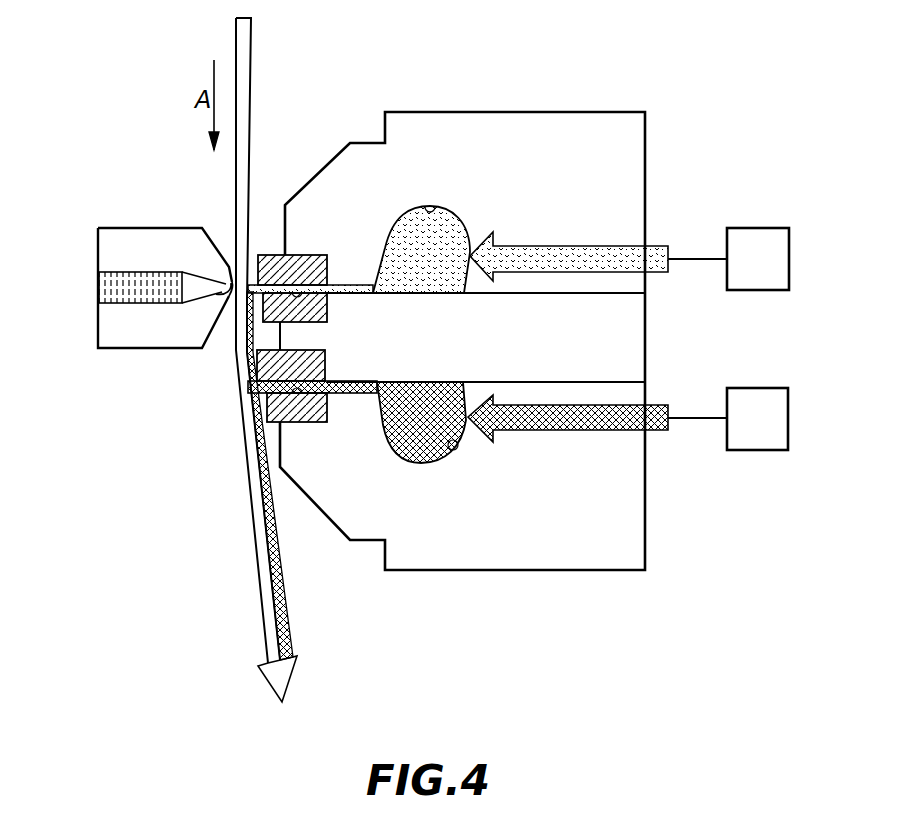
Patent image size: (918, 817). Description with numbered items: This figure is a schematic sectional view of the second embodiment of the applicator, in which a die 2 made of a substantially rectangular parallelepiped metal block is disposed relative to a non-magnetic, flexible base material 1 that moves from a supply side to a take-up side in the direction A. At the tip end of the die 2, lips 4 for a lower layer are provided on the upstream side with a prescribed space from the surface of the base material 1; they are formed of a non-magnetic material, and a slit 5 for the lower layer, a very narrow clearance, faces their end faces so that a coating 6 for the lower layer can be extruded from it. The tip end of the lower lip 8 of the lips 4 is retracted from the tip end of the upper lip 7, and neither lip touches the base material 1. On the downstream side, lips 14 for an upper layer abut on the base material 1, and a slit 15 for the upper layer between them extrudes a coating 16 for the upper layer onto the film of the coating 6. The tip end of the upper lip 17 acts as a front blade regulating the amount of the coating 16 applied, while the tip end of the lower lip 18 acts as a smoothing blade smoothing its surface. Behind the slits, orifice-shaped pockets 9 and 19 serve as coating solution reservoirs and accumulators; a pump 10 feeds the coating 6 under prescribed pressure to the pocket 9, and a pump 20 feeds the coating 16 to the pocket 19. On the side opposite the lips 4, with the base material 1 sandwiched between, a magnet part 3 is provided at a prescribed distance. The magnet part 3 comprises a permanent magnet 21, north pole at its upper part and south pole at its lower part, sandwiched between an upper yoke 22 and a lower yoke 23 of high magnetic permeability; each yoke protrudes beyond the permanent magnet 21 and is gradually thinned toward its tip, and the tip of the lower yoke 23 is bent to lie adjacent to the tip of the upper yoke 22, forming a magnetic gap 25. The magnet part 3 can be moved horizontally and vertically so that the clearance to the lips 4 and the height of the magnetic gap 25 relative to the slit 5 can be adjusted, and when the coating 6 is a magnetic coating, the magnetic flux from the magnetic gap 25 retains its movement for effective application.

The base material 1 is at (246, 68).
The die 2 is at (607, 78).
The magnet part 3 is at (134, 290).
The lips for a lower layer 4 is at (344, 300).
The slit for a lower layer 5 is at (299, 272).
The coating for the lower layer 6 is at (455, 216).
The upper lip 7 is at (272, 262).
The lower lip 8 is at (327, 318).
The pocket 9 is at (430, 212).
The pump 10 is at (760, 228).
The lips for the upper layer 14 is at (338, 396).
The slit for the upper layer 15 is at (305, 422).
The coating for the upper layer 16 is at (425, 463).
The upper lip 17 is at (328, 360).
The lower lip 18 is at (270, 405).
The pocket 19 is at (458, 441).
The pump 20 is at (757, 388).
The permanent magnet 21 is at (100, 283).
The upper yoke 22 is at (160, 232).
The lower yoke 23 is at (125, 342).
The magnetic gap 25 is at (226, 305).